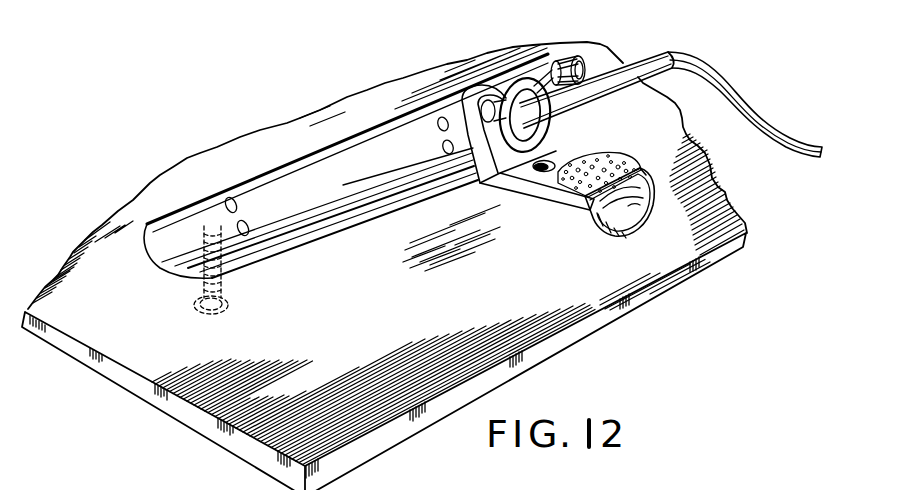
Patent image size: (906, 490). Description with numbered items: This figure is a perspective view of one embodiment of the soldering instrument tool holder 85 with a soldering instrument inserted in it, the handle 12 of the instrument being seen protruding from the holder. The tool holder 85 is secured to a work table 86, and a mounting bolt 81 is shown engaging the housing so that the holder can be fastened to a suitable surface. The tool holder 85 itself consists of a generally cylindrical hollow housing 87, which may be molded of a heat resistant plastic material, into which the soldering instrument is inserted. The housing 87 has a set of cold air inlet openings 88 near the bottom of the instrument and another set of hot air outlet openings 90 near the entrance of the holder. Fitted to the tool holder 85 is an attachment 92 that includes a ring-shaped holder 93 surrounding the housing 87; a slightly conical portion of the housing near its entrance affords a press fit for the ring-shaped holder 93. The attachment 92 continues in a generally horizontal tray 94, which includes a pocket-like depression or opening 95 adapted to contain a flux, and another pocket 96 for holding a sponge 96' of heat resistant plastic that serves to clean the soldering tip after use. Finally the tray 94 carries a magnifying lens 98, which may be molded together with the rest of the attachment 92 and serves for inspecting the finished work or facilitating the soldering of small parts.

The handle 12 is at (634, 37).
The mounting bolt 81 is at (222, 295).
The tool holder 85 is at (321, 140).
The work table 86 is at (372, 337).
The housing 87 is at (378, 220).
The cold air inlet openings 88 is at (237, 226).
The hot air outlet openings 90 is at (445, 154).
The attachment 92 is at (531, 202).
The ring-shaped holder 93 is at (458, 134).
The tray 94 is at (575, 163).
The pocket-like depression or opening 95 is at (548, 160).
The pocket 96 is at (597, 203).
The sponge 96' is at (648, 147).
The magnifying lens 98 is at (643, 205).